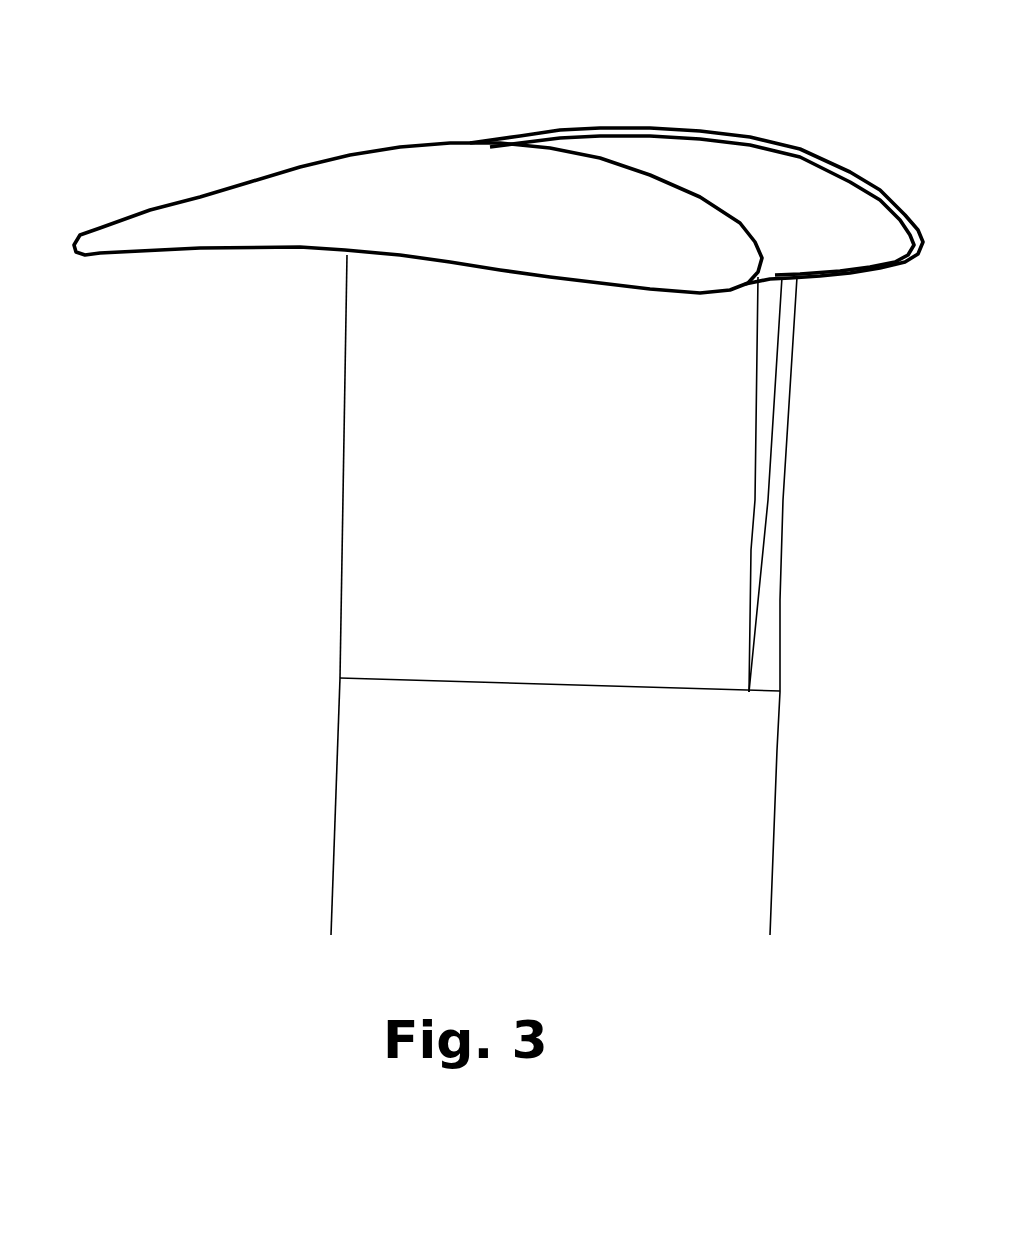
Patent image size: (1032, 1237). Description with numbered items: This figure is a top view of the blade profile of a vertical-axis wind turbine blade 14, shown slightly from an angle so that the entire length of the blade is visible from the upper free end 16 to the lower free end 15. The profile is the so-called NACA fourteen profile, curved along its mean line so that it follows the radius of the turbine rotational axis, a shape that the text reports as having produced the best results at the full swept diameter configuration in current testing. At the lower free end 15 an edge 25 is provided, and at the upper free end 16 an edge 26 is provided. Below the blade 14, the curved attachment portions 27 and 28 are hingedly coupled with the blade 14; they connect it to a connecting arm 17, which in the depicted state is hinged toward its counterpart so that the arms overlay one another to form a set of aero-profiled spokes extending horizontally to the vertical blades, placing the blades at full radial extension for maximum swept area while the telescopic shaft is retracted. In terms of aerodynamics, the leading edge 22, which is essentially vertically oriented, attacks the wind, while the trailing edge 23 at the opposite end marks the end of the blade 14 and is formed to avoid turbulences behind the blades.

The blade 14 is at (683, 160).
The lower free end 15 is at (848, 198).
The upper free end 16 is at (778, 263).
The connecting arm 17 is at (428, 823).
The leading edge 22 is at (897, 293).
The trailing edge 23 is at (58, 287).
The edge 25 is at (903, 213).
The edge 26 is at (317, 152).
The curved attachment portion 27 is at (407, 460).
The curved attachment portion 28 is at (782, 395).